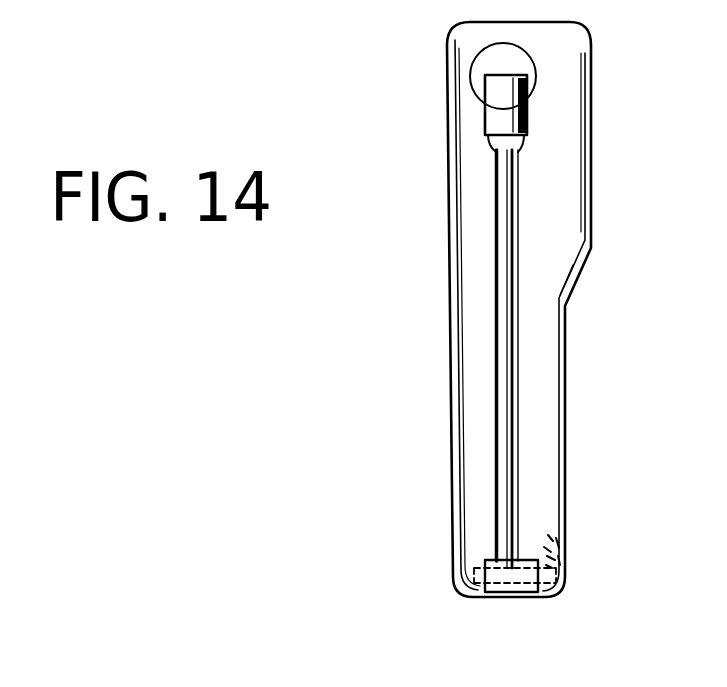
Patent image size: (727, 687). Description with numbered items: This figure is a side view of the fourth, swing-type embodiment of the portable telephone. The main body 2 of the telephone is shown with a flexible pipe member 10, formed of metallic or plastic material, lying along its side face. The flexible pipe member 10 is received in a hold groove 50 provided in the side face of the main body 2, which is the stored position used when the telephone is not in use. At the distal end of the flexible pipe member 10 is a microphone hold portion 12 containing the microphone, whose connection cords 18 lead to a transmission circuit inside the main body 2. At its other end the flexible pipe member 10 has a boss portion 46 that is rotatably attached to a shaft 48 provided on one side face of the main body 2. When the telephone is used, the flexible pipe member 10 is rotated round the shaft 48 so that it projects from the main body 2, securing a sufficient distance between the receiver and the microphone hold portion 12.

The main body 2 is at (596, 129).
The flexible pipe member 10 is at (518, 340).
The microphone hold portion 12 is at (492, 117).
The connection cords 18 is at (552, 542).
The boss portion 46 is at (494, 595).
The shaft 48 is at (550, 594).
The hold groove 50 is at (514, 200).